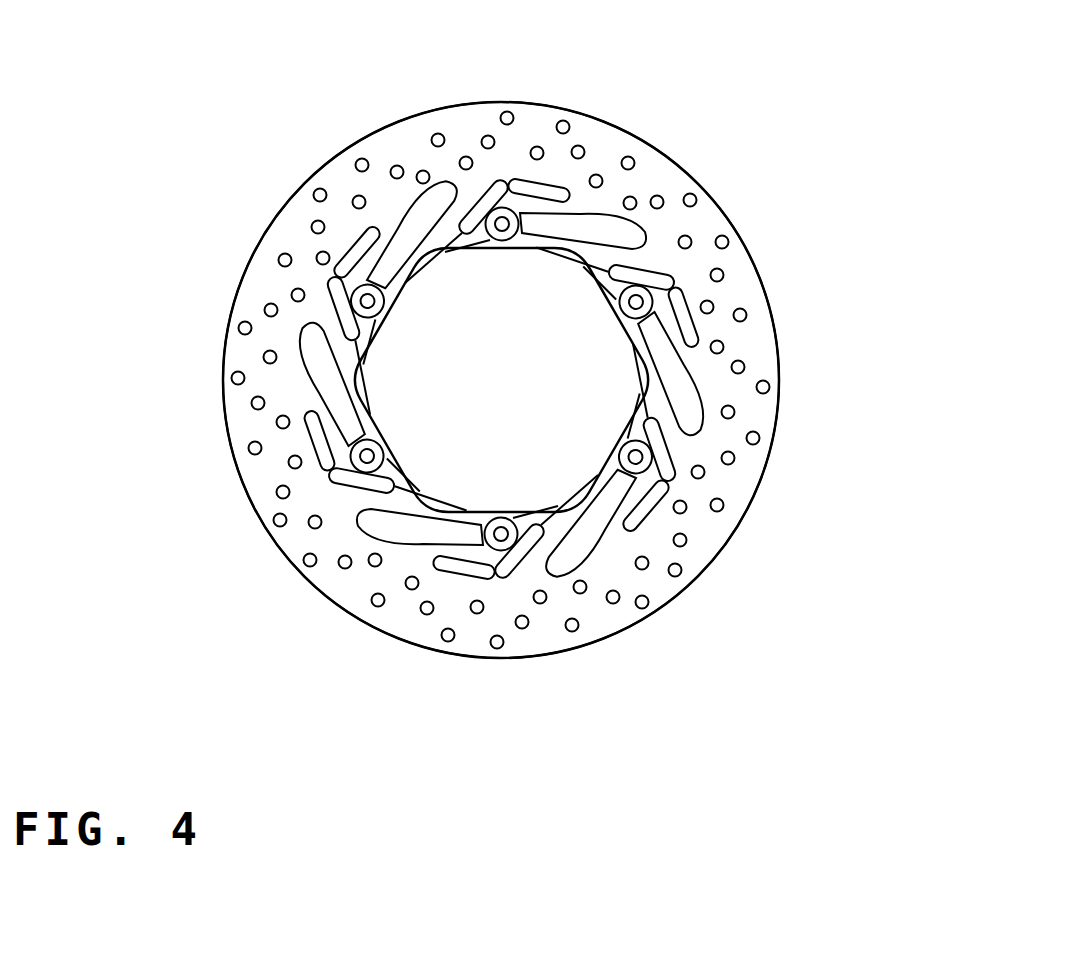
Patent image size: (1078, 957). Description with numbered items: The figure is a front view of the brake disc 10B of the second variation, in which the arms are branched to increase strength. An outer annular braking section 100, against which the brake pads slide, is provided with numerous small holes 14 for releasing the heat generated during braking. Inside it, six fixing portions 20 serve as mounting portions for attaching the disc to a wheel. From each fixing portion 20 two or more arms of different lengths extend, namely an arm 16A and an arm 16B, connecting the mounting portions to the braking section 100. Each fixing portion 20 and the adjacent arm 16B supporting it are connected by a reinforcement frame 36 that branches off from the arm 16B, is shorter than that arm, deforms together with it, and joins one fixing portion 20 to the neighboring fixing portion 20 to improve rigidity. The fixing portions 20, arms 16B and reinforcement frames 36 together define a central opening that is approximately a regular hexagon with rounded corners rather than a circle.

The brake disc 10B is at (668, 140).
The braking section 100 is at (603, 660).
The reinforcement frame 36 is at (462, 255).
The small hole 14 is at (278, 262).
The fixing portion 20 is at (327, 283).
The arm 16A is at (539, 205).
The arm 16B is at (397, 242).